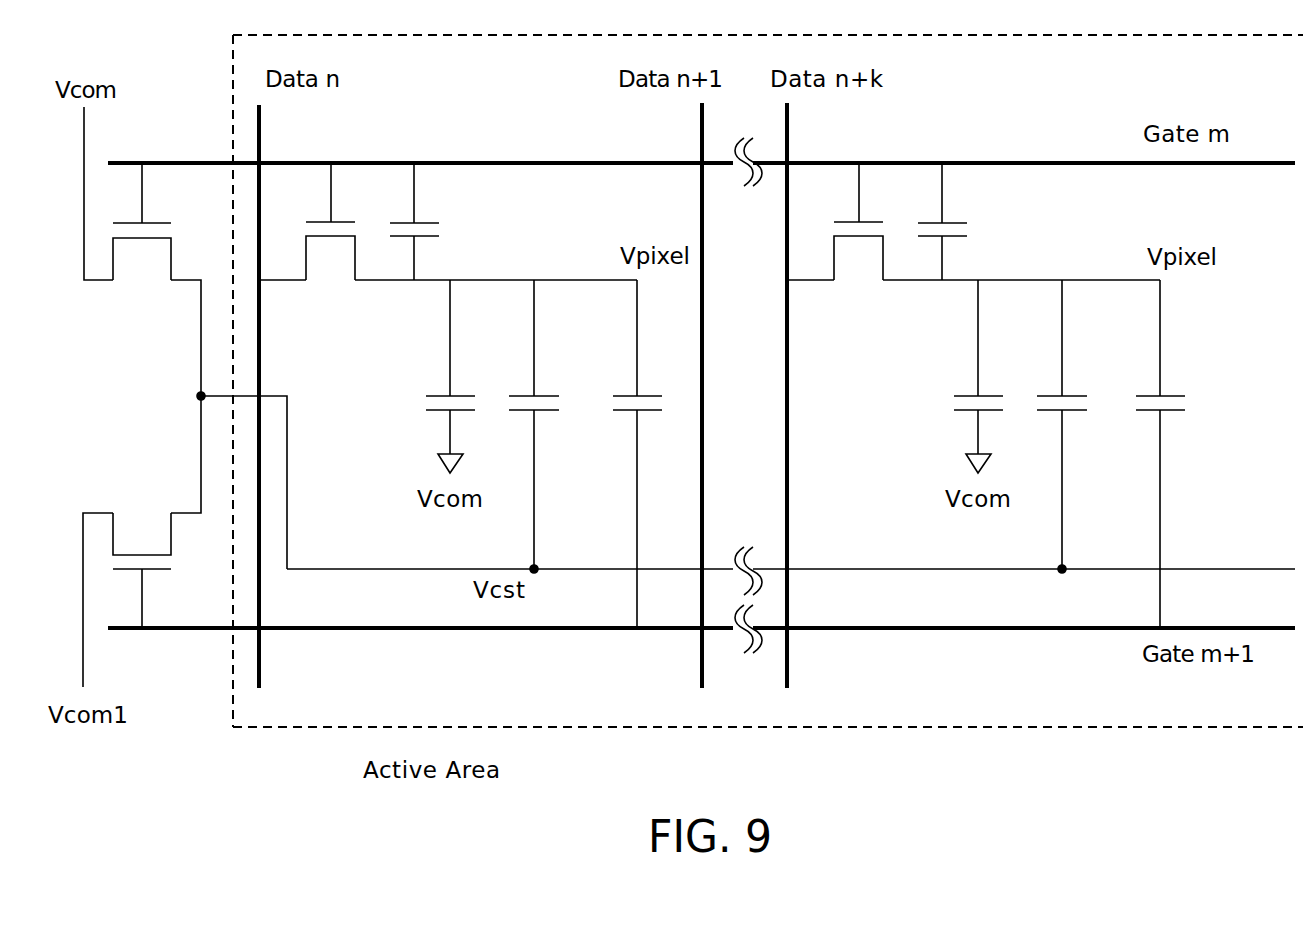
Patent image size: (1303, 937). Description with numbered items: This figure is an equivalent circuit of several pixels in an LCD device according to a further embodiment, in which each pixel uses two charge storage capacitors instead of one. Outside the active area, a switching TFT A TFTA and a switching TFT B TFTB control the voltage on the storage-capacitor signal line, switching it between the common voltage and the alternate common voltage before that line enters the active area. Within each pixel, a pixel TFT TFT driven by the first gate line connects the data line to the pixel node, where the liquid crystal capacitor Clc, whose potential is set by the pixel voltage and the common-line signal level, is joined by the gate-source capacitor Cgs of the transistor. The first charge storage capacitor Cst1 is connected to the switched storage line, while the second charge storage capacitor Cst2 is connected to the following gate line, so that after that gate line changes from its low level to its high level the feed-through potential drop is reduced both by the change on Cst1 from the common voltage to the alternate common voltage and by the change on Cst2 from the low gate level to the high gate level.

The switching TFT A TFTA is at (142, 243).
The switching TFT B TFTB is at (142, 550).
The pixel TFT is at (594, 242).
The gate-source capacitor Cgs is at (706, 221).
The liquid crystal capacitor Clc is at (694, 376).
The first charge storage capacitor Cst1 is at (816, 426).
The second charge storage capacitor Cst2 is at (900, 454).